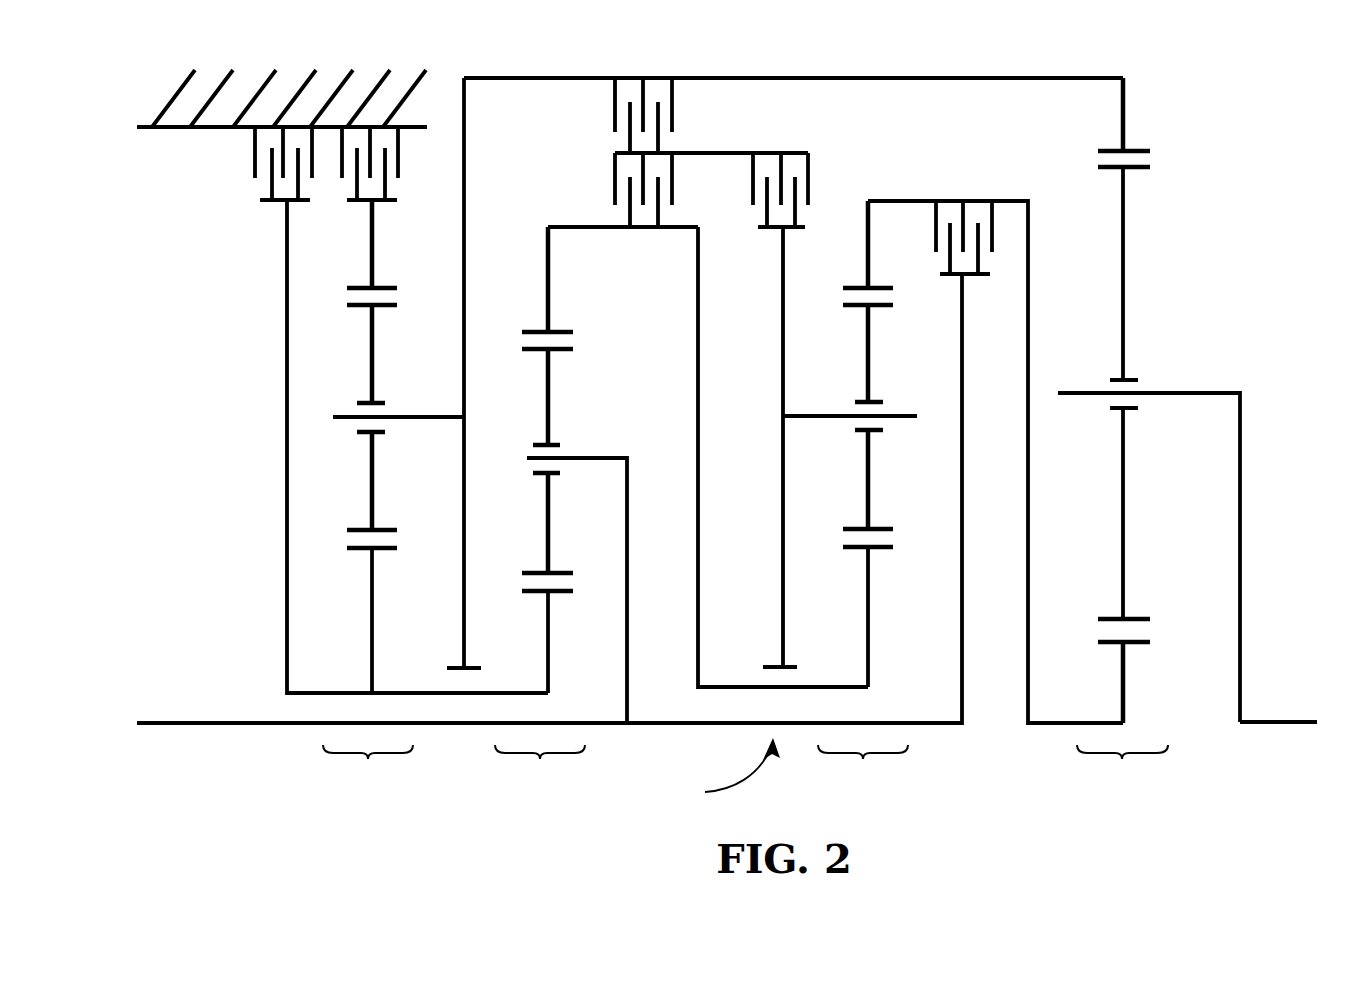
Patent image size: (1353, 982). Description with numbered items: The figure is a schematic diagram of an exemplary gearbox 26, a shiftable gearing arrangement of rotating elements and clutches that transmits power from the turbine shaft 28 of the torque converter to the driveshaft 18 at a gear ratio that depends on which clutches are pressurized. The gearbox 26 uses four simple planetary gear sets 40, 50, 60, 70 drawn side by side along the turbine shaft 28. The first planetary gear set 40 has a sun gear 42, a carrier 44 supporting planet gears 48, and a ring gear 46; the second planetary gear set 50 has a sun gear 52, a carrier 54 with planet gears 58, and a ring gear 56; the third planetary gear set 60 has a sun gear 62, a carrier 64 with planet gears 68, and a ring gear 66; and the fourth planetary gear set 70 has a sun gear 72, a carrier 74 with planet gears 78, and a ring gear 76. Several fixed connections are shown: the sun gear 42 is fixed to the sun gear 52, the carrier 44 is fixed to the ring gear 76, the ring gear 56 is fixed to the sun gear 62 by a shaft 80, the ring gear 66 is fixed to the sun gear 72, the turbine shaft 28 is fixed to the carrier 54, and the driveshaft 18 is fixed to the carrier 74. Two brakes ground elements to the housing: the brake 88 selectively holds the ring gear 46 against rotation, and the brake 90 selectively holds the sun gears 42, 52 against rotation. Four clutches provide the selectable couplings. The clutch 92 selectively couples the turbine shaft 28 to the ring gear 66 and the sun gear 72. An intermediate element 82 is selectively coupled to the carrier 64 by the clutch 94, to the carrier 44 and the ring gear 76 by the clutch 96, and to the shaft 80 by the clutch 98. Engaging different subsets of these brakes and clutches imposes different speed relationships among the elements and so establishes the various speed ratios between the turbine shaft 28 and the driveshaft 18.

The driveshaft 18 is at (1265, 722).
The gearbox 26 is at (726, 772).
The turbine shaft 28 is at (263, 723).
The planetary gear set 40 is at (368, 768).
The sun gear 42 is at (372, 640).
The carrier 44 is at (465, 178).
The ring gear 46 is at (372, 270).
The planet gears 48 is at (372, 378).
The planetary gear set 50 is at (540, 768).
The sun gear 52 is at (548, 655).
The carrier 54 is at (627, 598).
The ring gear 56 is at (548, 290).
The planet gears 58 is at (548, 422).
The planetary gear set 60 is at (863, 768).
The sun gear 62 is at (868, 627).
The carrier 64 is at (783, 330).
The ring gear 66 is at (868, 225).
The planet gears 68 is at (868, 375).
The planetary gear set 70 is at (1122, 768).
The sun gear 72 is at (1123, 700).
The carrier 74 is at (1158, 393).
The ring gear 76 is at (1123, 140).
The planet gears 78 is at (1123, 273).
The shaft 80 is at (698, 417).
The intermediate element 82 is at (688, 158).
The brake 88 is at (398, 153).
The brake 90 is at (255, 153).
The clutch 92 is at (968, 201).
The clutch 94 is at (765, 153).
The clutch 96 is at (615, 93).
The clutch 98 is at (615, 165).